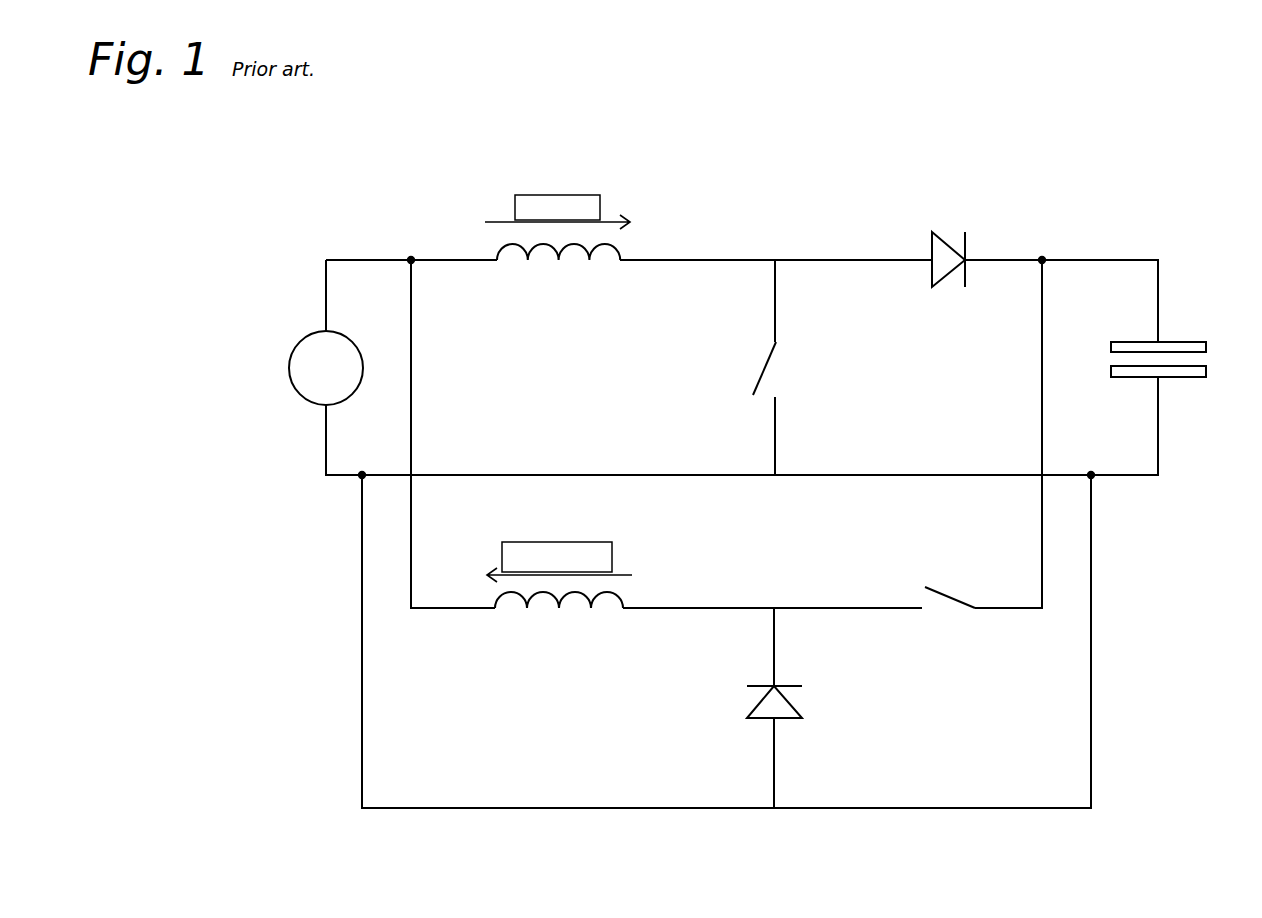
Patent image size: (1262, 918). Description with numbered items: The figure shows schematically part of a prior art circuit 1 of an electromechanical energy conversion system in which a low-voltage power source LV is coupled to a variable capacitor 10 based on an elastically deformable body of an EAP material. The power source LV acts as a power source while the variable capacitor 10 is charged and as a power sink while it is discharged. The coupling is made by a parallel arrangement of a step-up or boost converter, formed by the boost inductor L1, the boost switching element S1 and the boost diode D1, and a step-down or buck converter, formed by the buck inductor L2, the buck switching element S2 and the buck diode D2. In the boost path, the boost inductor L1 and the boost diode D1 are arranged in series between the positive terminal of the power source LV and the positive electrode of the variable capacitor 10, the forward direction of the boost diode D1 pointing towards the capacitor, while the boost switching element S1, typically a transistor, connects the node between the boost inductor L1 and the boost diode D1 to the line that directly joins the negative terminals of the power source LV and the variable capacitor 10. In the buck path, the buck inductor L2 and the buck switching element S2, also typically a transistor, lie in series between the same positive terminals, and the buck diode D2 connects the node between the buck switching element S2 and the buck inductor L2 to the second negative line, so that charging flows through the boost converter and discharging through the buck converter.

The circuit 1 is at (747, 485).
The variable capacitor 10 is at (1192, 370).
The low-voltage power source LV is at (303, 378).
The boost inductor L1 is at (547, 252).
The buck inductor L2 is at (555, 612).
The boost switching element S1 is at (764, 371).
The buck switching element S2 is at (953, 600).
The boost diode D1 is at (943, 273).
The buck diode D2 is at (780, 705).